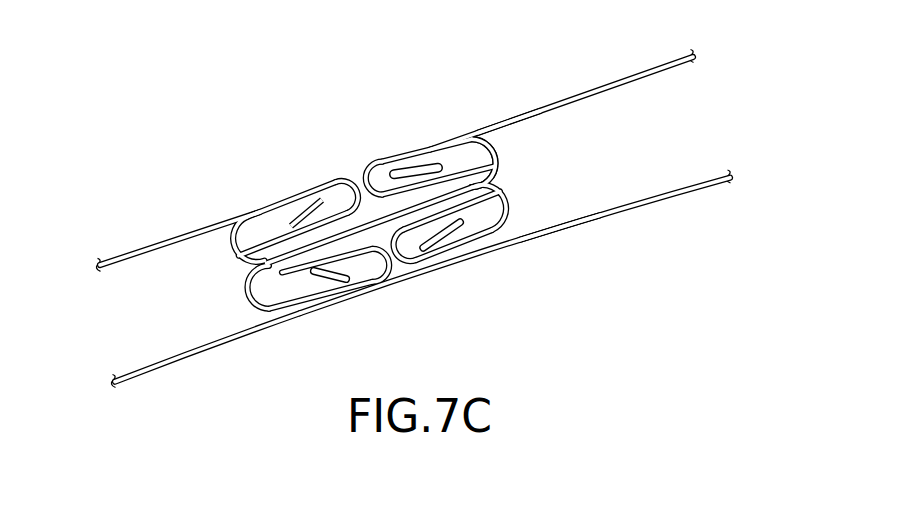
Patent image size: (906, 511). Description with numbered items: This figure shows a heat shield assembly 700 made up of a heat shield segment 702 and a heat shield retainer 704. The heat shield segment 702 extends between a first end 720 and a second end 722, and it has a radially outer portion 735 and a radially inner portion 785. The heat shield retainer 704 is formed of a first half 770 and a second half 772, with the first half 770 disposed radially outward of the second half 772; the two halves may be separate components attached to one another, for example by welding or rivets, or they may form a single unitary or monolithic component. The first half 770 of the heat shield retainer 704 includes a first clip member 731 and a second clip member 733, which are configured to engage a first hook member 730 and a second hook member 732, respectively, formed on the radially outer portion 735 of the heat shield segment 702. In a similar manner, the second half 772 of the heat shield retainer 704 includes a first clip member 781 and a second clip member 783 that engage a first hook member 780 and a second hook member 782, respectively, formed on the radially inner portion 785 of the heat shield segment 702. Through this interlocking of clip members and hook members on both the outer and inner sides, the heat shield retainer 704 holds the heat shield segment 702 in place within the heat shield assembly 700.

The heat shield assembly 700 is at (190, 128).
The heat shield segment 702 is at (622, 202).
The heat shield retainer 704 is at (500, 165).
The first end 720 is at (577, 96).
The second end 722 is at (163, 243).
The first hook member 730 is at (372, 160).
The first clip member 731 is at (436, 147).
The second hook member 732 is at (348, 185).
The second clip member 733 is at (250, 213).
The radially outer portion 735 is at (512, 120).
The first half 770 is at (490, 143).
The second half 772 is at (517, 202).
The first hook member 780 is at (430, 266).
The first clip member 781 is at (468, 243).
The second hook member 782 is at (380, 281).
The second clip member 783 is at (297, 302).
The radially inner portion 785 is at (548, 232).